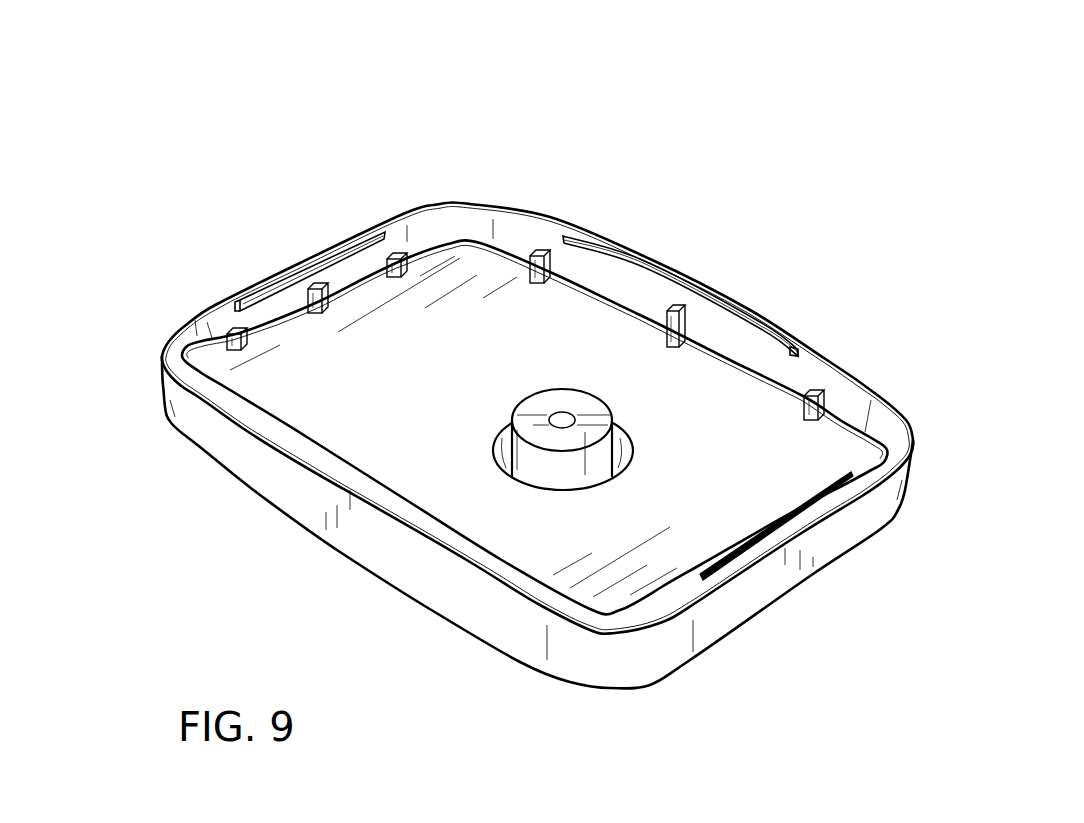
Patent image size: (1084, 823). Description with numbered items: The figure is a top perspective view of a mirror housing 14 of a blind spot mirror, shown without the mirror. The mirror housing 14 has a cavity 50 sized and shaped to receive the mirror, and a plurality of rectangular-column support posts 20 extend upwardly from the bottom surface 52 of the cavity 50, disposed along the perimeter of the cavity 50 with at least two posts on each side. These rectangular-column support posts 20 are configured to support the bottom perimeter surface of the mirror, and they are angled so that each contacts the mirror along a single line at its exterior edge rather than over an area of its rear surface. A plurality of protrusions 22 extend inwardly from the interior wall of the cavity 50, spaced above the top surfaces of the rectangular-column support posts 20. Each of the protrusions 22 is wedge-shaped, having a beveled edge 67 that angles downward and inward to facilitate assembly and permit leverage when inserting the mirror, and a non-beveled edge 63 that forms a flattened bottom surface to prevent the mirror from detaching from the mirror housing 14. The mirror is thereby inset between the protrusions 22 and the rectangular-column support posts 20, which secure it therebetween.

The mirror housing 14 is at (999, 101).
The cavity 50 is at (461, 241).
The bottom surface 52 is at (426, 405).
The rectangular-column support posts 20 is at (248, 343).
The protrusions 22 is at (707, 298).
The beveled edge 67 is at (780, 338).
The non-beveled edge 63 is at (752, 345).